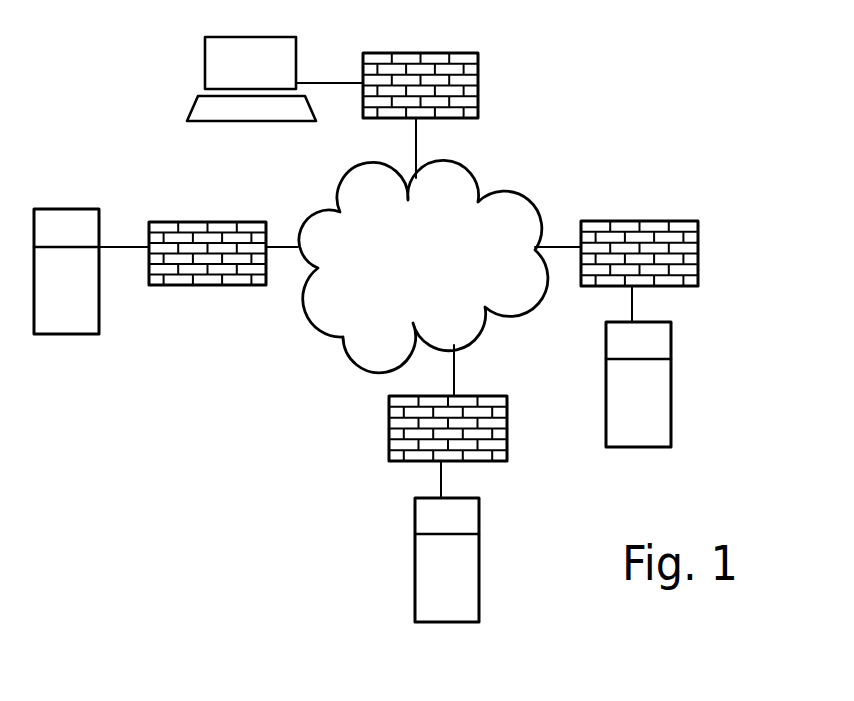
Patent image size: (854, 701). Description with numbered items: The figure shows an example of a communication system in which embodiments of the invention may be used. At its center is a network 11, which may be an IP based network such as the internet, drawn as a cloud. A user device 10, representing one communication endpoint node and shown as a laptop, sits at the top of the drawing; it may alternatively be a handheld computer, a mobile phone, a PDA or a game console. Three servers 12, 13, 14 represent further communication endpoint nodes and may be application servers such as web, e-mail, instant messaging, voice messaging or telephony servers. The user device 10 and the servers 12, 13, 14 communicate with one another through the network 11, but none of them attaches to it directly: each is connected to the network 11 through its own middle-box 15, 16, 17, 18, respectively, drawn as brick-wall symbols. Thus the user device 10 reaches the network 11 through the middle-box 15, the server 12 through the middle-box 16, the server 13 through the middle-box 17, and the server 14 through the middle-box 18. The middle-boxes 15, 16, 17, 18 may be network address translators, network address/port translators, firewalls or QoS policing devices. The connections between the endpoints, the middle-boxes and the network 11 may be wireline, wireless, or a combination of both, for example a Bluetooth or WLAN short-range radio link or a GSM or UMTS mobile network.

The user device 10 is at (285, 36).
The network 11 is at (530, 197).
The server 12 is at (672, 343).
The server 13 is at (415, 523).
The server 14 is at (53, 209).
The middle-box 15 is at (468, 53).
The middle-box 16 is at (683, 221).
The middle-box 17 is at (482, 396).
The middle-box 18 is at (180, 222).